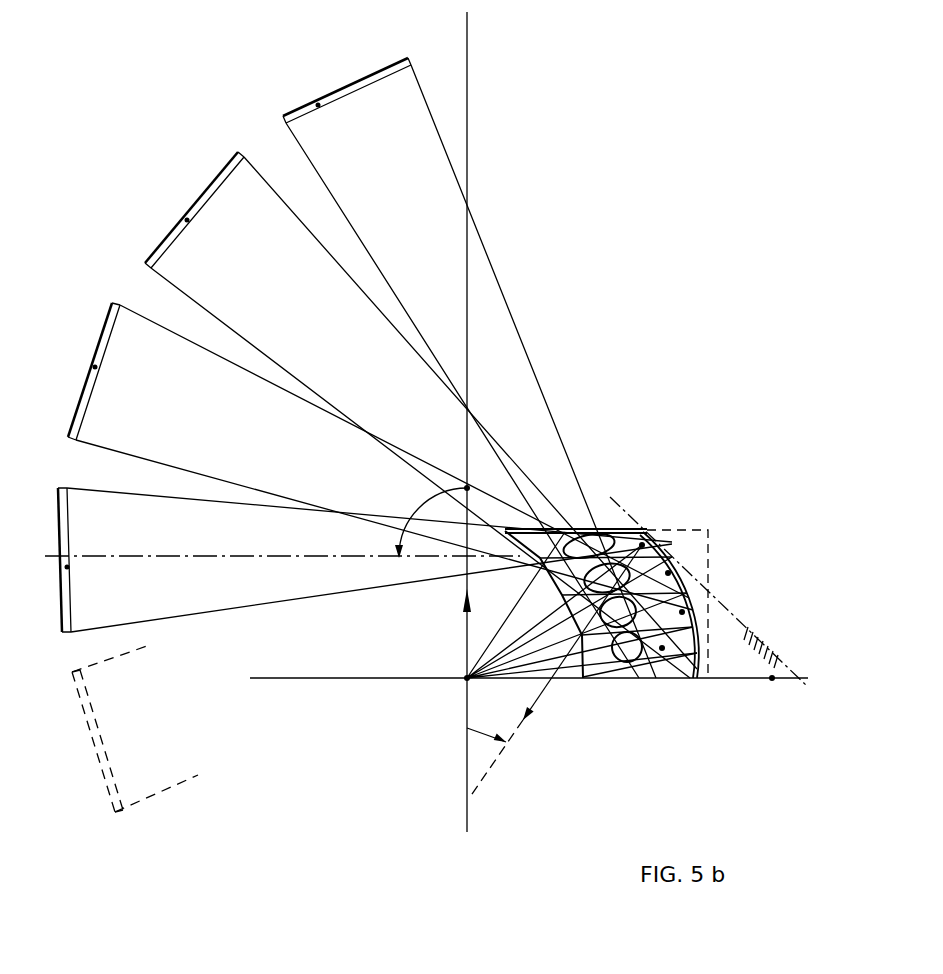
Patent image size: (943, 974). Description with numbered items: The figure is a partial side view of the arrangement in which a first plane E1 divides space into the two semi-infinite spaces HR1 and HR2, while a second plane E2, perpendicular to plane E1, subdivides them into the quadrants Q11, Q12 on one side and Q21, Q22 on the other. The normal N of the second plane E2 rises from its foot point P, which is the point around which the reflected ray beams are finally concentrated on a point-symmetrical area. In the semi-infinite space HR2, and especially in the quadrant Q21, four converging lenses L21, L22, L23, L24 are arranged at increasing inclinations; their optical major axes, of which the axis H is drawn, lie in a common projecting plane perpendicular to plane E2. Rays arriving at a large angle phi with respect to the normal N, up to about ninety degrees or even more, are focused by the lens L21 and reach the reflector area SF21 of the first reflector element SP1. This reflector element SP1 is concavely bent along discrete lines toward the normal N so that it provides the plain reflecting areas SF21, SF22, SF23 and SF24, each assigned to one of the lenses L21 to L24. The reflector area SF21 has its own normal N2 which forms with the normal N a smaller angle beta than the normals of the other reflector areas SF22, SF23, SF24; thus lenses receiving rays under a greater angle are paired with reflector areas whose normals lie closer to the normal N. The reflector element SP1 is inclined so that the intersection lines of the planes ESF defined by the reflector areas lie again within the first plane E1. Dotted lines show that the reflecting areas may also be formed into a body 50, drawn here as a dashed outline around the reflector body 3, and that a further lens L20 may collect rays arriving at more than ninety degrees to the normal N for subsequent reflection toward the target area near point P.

The converging lens L21 is at (67, 567).
The converging lens L22 is at (95, 367).
The converging lens L23 is at (187, 220).
The converging lens L24 is at (318, 105).
The further lens L20 is at (95, 740).
The reflector area SF21 is at (657, 532).
The reflector area SF22 is at (668, 573).
The reflector area SF23 is at (682, 612).
The reflector area SF24 is at (662, 648).
The sensor body 3 is at (706, 564).
The body 50 is at (705, 522).
The first reflector element SP1 is at (600, 510).
The optical axis H is at (222, 556).
The normal N is at (454, 607).
The normal of reflector area N2 is at (556, 671).
The foot of the normal P is at (465, 681).
The first plane E1 is at (467, 786).
The second plane E2 is at (773, 681).
The plane of reflector area ESF is at (712, 592).
The semi-infinite space HR1 is at (683, 85).
The semi-infinite space HR2 is at (150, 85).
The quadrant Q11 is at (678, 260).
The quadrant Q12 is at (668, 767).
The quadrant Q21 is at (126, 217).
The quadrant Q22 is at (293, 767).
The angle of incoming rays phi is at (429, 518).
The angle of reflector normal beta is at (486, 720).